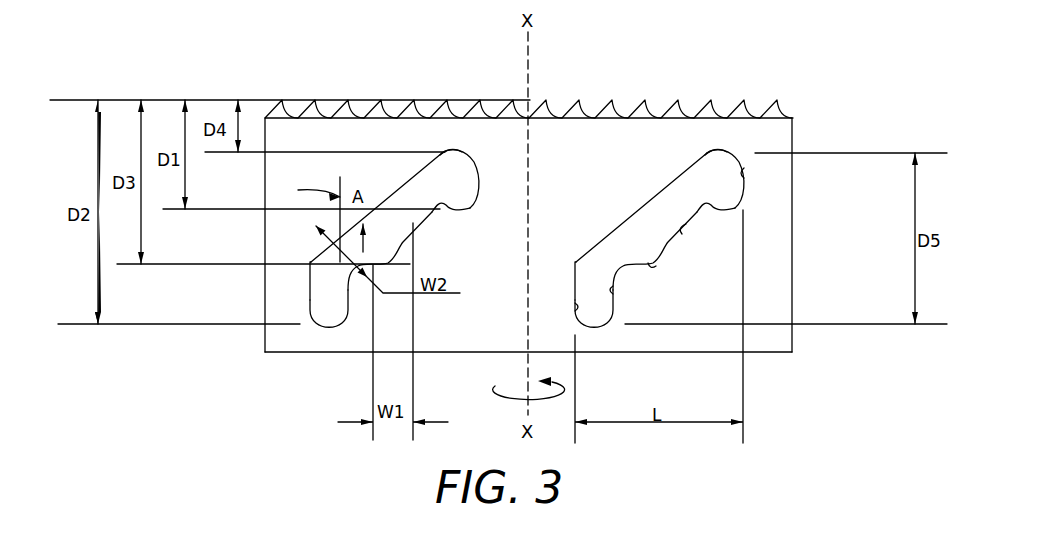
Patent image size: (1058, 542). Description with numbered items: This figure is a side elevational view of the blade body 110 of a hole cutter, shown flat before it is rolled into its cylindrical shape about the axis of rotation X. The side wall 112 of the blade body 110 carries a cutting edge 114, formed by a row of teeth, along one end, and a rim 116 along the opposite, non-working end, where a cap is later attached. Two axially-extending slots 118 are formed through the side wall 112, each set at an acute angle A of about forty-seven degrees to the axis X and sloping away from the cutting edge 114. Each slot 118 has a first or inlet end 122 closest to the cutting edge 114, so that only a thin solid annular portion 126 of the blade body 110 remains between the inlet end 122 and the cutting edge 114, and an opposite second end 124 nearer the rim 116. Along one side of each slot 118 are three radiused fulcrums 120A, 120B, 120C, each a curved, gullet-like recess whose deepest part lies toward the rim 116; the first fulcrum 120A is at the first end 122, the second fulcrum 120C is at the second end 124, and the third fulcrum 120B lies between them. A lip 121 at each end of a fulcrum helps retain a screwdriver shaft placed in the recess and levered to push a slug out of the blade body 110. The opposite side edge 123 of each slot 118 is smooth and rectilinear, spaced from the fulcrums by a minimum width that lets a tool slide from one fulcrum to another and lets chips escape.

The blade body 110 is at (263, 183).
The side wall 112 is at (460, 318).
The cutting edge 114 is at (575, 103).
The rim 116 is at (278, 354).
The axially-extending slot 118 is at (405, 223).
The first fulcrum 120A is at (470, 197).
The third fulcrum 120B is at (405, 250).
The second fulcrum 120C is at (322, 320).
The lip 121 is at (717, 175).
The first end of slot 122 is at (450, 150).
The side edge of slot 123 is at (402, 184).
The second end of slot 124 is at (315, 262).
The annular portion 126 is at (341, 137).